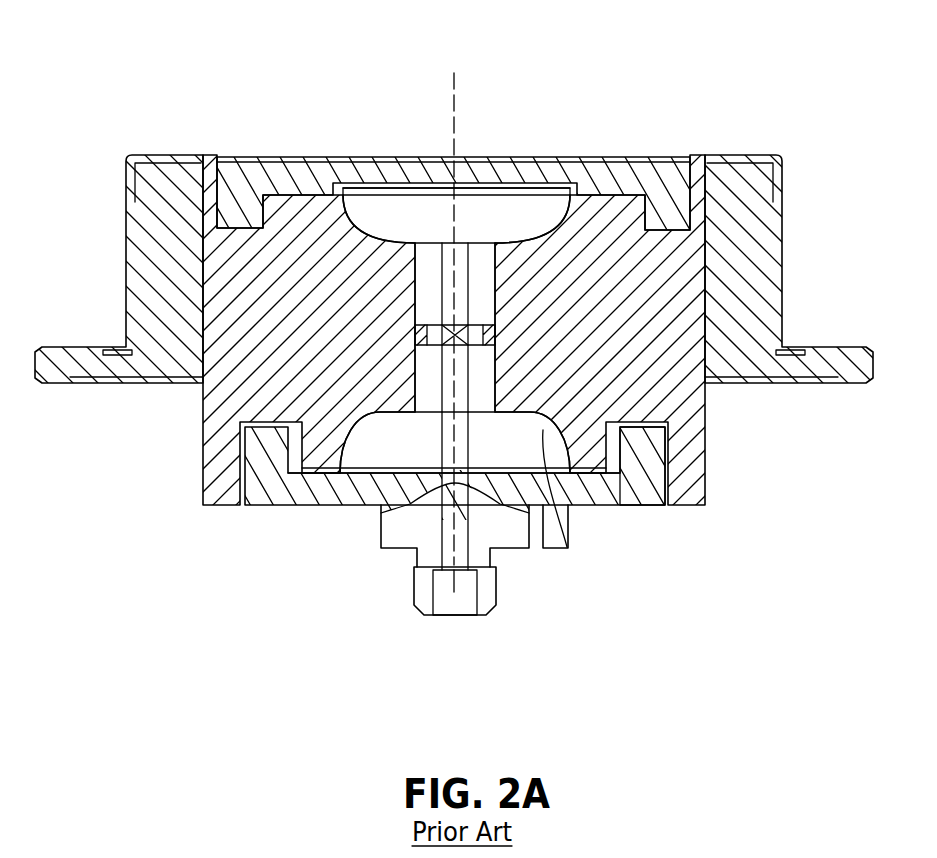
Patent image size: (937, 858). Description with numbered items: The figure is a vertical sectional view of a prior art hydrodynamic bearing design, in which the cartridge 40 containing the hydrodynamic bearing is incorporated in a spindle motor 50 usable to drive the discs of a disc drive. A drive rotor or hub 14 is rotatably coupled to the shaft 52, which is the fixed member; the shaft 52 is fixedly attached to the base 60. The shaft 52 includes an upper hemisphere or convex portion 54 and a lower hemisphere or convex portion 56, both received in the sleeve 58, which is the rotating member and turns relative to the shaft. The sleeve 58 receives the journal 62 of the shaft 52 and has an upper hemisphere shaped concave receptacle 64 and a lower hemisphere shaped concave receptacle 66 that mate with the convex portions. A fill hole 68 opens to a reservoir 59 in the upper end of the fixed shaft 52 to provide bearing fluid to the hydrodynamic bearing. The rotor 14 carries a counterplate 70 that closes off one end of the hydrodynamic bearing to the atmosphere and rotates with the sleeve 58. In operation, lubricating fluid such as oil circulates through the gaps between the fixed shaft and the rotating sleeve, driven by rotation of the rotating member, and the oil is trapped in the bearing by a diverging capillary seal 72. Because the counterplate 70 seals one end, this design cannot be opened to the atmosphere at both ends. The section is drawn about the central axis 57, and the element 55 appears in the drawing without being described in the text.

The spindle motor 50 is at (122, 150).
The cartridge 40 is at (272, 153).
The drive rotor or hub 14 is at (757, 255).
The counterplate 70 is at (597, 175).
The upper hemisphere shaped concave receptacle 64 is at (370, 155).
The upper hemisphere or convex portion 54 is at (510, 180).
The central axis 57 is at (453, 90).
The journal 62 is at (480, 305).
The shaft 52 is at (425, 367).
The bearing 55 is at (565, 243).
The reservoir 59 is at (367, 473).
The lower hemisphere or convex portion 56 is at (450, 392).
The sleeve 58 is at (683, 417).
The diverging capillary seal 72 is at (288, 468).
The base 60 is at (643, 507).
The lower hemisphere shaped concave receptacle 66 is at (567, 547).
The fill hole 68 is at (467, 617).